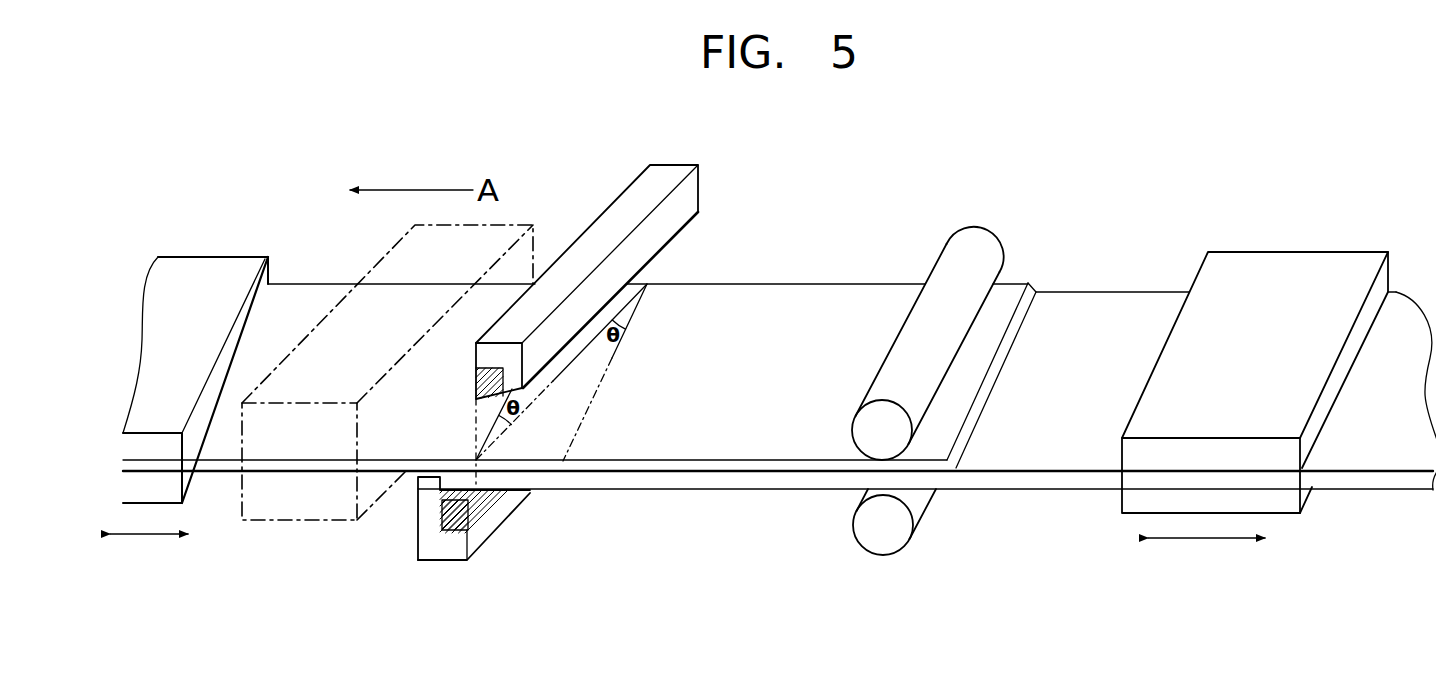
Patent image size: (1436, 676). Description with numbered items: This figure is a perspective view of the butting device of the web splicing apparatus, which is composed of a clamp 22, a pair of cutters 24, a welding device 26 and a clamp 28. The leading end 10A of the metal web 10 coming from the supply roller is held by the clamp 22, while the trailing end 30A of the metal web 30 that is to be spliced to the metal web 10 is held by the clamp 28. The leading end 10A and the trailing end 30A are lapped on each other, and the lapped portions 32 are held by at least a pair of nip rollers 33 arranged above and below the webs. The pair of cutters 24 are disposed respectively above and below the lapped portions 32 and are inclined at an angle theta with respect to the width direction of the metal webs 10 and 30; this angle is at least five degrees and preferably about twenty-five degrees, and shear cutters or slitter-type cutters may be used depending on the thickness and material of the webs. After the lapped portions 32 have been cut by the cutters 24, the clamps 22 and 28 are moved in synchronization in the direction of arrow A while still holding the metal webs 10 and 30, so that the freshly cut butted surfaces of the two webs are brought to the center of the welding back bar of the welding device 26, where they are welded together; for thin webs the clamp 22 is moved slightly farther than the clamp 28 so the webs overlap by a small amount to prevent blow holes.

The metal web 10 is at (1127, 303).
The leading end of the metal web 10A is at (723, 493).
The clamp 22 is at (1283, 250).
The cutter 24 is at (635, 195).
The welding device 26 is at (325, 522).
The clamp 28 is at (217, 268).
The metal web 30 is at (310, 312).
The trailing end of the metal web 30A is at (787, 297).
The lapped portion 32 is at (602, 480).
The nip roller 33 is at (957, 250).